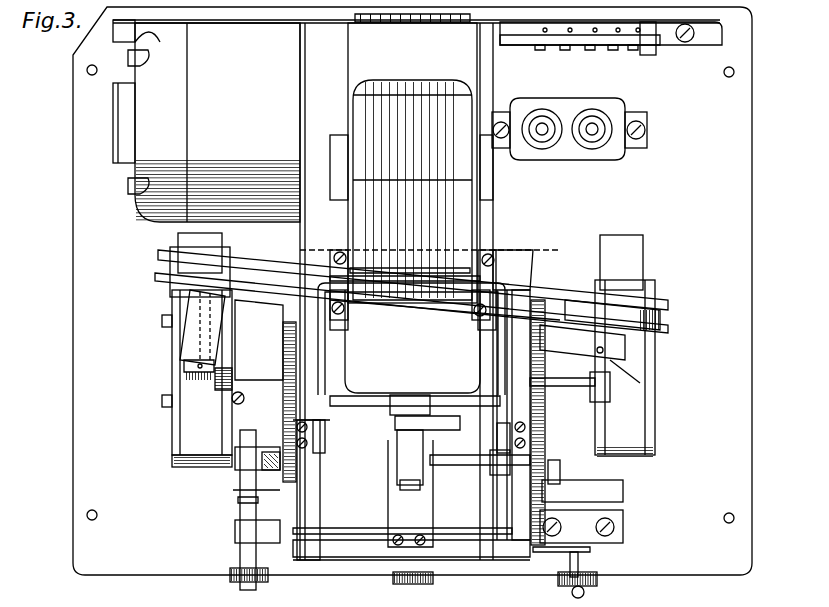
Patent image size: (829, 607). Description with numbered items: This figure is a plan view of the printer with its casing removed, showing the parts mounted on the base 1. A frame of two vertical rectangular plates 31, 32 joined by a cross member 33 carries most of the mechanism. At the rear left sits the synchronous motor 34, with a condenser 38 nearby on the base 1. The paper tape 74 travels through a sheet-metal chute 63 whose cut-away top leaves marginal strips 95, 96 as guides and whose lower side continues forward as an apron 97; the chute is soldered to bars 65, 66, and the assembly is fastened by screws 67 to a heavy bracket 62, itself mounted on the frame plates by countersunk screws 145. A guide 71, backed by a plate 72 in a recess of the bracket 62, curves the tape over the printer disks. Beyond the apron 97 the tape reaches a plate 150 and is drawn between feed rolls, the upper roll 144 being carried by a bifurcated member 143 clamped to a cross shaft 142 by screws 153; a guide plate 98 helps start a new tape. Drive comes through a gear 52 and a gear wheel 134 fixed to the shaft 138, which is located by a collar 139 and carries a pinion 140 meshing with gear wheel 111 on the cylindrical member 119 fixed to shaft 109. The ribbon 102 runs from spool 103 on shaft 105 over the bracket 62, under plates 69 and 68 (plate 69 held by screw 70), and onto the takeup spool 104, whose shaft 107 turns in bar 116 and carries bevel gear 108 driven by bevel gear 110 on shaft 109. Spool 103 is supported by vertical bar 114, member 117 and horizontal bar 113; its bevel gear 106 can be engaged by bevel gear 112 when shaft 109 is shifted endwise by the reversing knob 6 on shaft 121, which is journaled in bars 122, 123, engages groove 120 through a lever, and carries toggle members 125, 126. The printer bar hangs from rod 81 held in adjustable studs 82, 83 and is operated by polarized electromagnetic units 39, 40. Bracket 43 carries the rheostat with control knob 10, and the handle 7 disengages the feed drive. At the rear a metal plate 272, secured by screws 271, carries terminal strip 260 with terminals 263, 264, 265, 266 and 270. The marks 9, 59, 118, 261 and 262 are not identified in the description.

The base 1 is at (690, 572).
The ribbon-reversing knob 6 is at (240, 580).
The extension lever or handle 7 is at (410, 80).
The section line 9 is at (325, 237).
The control knob 10 is at (597, 580).
The rectangular plate 31 is at (258, 508).
The rectangular plate 32 is at (560, 470).
The cross member 33 is at (462, 428).
The motor 34 is at (148, 205).
The condenser 38 is at (590, 160).
The polarized electro-magnetic unit 39 is at (190, 462).
The polarized electro-magnetic unit 40 is at (650, 420).
The bracket 43 is at (625, 527).
The gear 52 is at (448, 418).
The knob 59 is at (440, 575).
The bracket 62 is at (507, 250).
The chute 63 is at (356, 58).
The bar 65 is at (494, 178).
The bar 66 is at (330, 177).
The screws 67 is at (345, 258).
The metal plate 68 is at (533, 268).
The metal plate 69 is at (348, 300).
The screw 70 is at (340, 315).
The guide 71 is at (395, 270).
The plate 72 is at (420, 272).
The paper tape 74 is at (365, 105).
The rod 81 is at (345, 355).
The stud 82 is at (352, 418).
The stud 83 is at (500, 430).
The marginal strip 95 is at (345, 250).
The marginal strip 96 is at (480, 262).
The apron 97 is at (380, 400).
The guide plate 98 is at (350, 560).
The ribbon 102 is at (455, 300).
The spool 103 is at (158, 254).
The spool 104 is at (668, 305).
The shaft 105 is at (190, 318).
The bevel gear 106 is at (188, 362).
The shaft 107 is at (620, 345).
The beveled gear 108 is at (640, 383).
The shaft 109 is at (565, 385).
The beveled gear 110 is at (605, 385).
The gear wheel 111 is at (285, 345).
The bevel gear 112 is at (222, 385).
The horizontal bar 113 is at (257, 320).
The vertical rectangular bar 114 is at (165, 297).
The rectangular bar 116 is at (600, 355).
The member 117 is at (190, 337).
The spring 118 is at (372, 393).
The cylindrical member 119 is at (272, 404).
The groove 120 is at (235, 405).
The shaft 121 is at (243, 512).
The horizontal rectangular bar 122 is at (235, 460).
The horizontal rectangular bar 123 is at (235, 538).
The upright member 125 is at (245, 500).
The toggle member 126 is at (230, 492).
The gear wheel 134 is at (545, 432).
The shaft 138 is at (442, 462).
The collar 139 is at (498, 480).
The pinion 140 is at (272, 470).
The cross shaft 142 is at (478, 520).
The member 143 is at (410, 508).
The upper roll 144 is at (408, 455).
The countersunk screws 145 is at (280, 258).
The plate 150 is at (515, 560).
The screws 153 is at (400, 537).
The terminal strip 260 is at (655, 42).
The bar 261 is at (637, 14).
The plate 262 is at (478, 22).
The terminal 263 is at (630, 48).
The terminal 264 is at (608, 48).
The terminal 265 is at (588, 48).
The terminal 266 is at (568, 48).
The terminal 270 is at (500, 45).
The screws 271 is at (686, 42).
The metal plate 272 is at (705, 25).